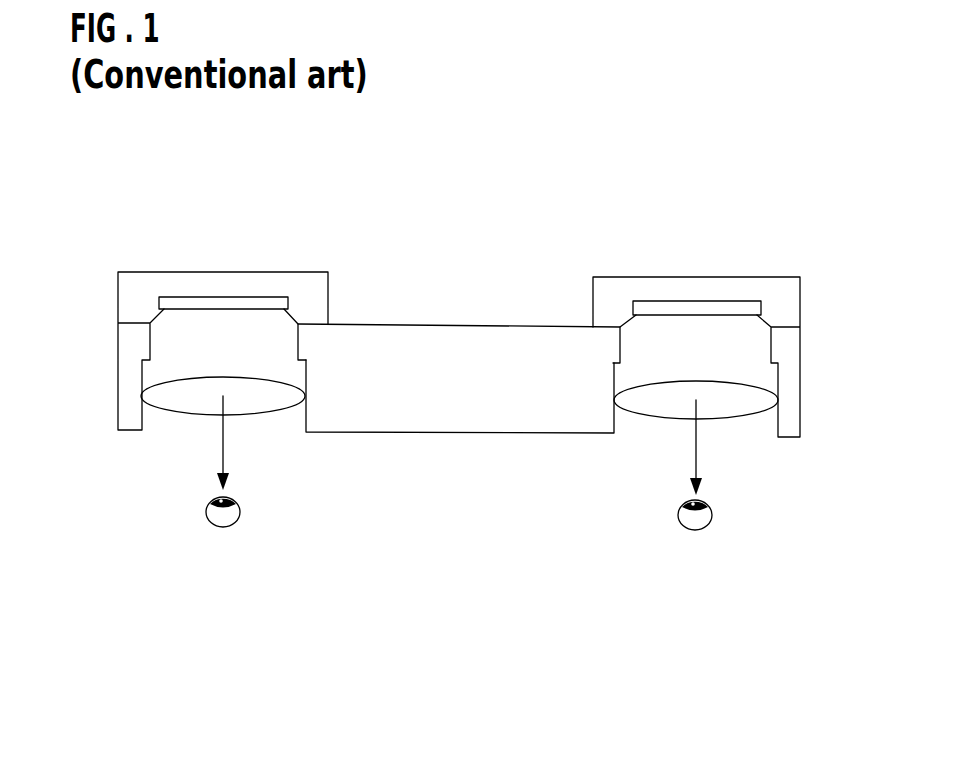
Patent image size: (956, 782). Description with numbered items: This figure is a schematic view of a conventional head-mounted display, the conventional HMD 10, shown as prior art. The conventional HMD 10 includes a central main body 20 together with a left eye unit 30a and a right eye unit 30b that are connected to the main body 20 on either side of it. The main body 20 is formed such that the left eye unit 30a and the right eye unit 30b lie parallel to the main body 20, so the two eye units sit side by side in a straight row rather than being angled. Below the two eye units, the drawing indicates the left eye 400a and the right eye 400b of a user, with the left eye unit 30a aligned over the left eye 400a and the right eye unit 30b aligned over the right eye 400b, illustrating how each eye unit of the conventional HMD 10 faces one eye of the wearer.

The conventional HMD 10 is at (765, 166).
The main body 20 is at (462, 413).
The left eye unit 30a is at (142, 397).
The right eye unit 30b is at (767, 402).
The left eye 400a is at (225, 541).
The right eye 400b is at (690, 544).